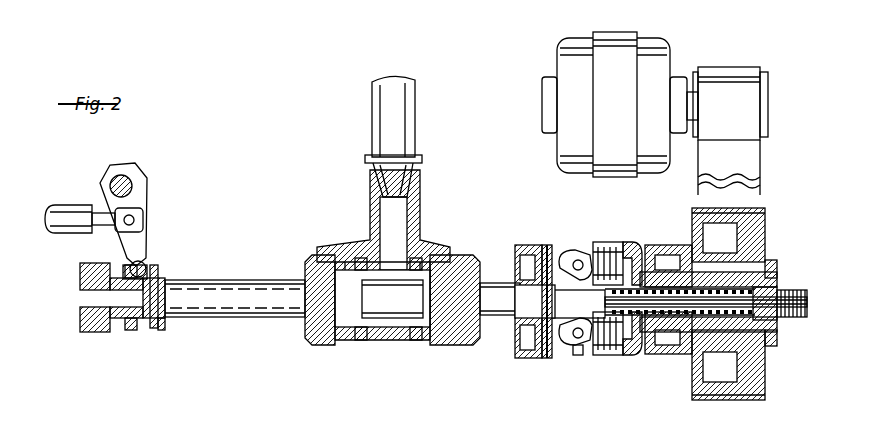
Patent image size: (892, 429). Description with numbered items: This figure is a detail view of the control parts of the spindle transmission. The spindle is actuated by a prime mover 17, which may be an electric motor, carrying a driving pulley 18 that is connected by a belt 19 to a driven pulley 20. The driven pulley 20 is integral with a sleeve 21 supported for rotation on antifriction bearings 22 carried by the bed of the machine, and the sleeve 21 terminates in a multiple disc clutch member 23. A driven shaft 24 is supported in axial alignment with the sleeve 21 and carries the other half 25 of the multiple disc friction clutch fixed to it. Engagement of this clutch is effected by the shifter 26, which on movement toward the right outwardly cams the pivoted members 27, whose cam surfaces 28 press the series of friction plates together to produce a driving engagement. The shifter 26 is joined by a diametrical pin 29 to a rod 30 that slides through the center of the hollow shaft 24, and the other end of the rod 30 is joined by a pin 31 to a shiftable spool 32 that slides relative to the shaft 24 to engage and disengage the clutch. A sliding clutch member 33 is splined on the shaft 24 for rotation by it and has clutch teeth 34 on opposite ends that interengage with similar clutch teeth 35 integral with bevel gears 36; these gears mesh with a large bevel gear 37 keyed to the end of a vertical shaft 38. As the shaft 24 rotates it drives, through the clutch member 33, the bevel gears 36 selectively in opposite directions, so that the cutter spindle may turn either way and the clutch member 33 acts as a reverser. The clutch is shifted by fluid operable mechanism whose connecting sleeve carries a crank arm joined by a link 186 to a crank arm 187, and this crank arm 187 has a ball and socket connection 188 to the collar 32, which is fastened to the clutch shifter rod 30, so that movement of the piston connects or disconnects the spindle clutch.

The prime mover 17 is at (637, 32).
The driving pulley 18 is at (768, 72).
The belt 19 is at (753, 163).
The driven pulley 20 is at (692, 385).
The sleeve 21 is at (653, 365).
The antifriction bearings 22 is at (663, 243).
The multiple disc clutch member 23 is at (628, 252).
The driven shaft 24 is at (502, 320).
The other half of the multiple disc friction clutch 25 is at (582, 355).
The shifter 26 is at (540, 357).
The pivoted members 27 is at (560, 352).
The cam surfaces 28 is at (580, 250).
The diametrical pin 29 is at (545, 247).
The rod 30 is at (173, 290).
The pin 31 is at (154, 266).
The shiftable spool 32 is at (161, 323).
The sliding clutch member 33 is at (370, 330).
The clutch teeth 34 is at (368, 329).
The clutch teeth 35 is at (348, 342).
The bevel gears 36 is at (457, 343).
The large bevel gear 37 is at (347, 247).
The vertical shaft 38 is at (397, 122).
The link 186 is at (80, 197).
The crank arm 187 is at (126, 242).
The ball and socket connection 188 is at (143, 262).